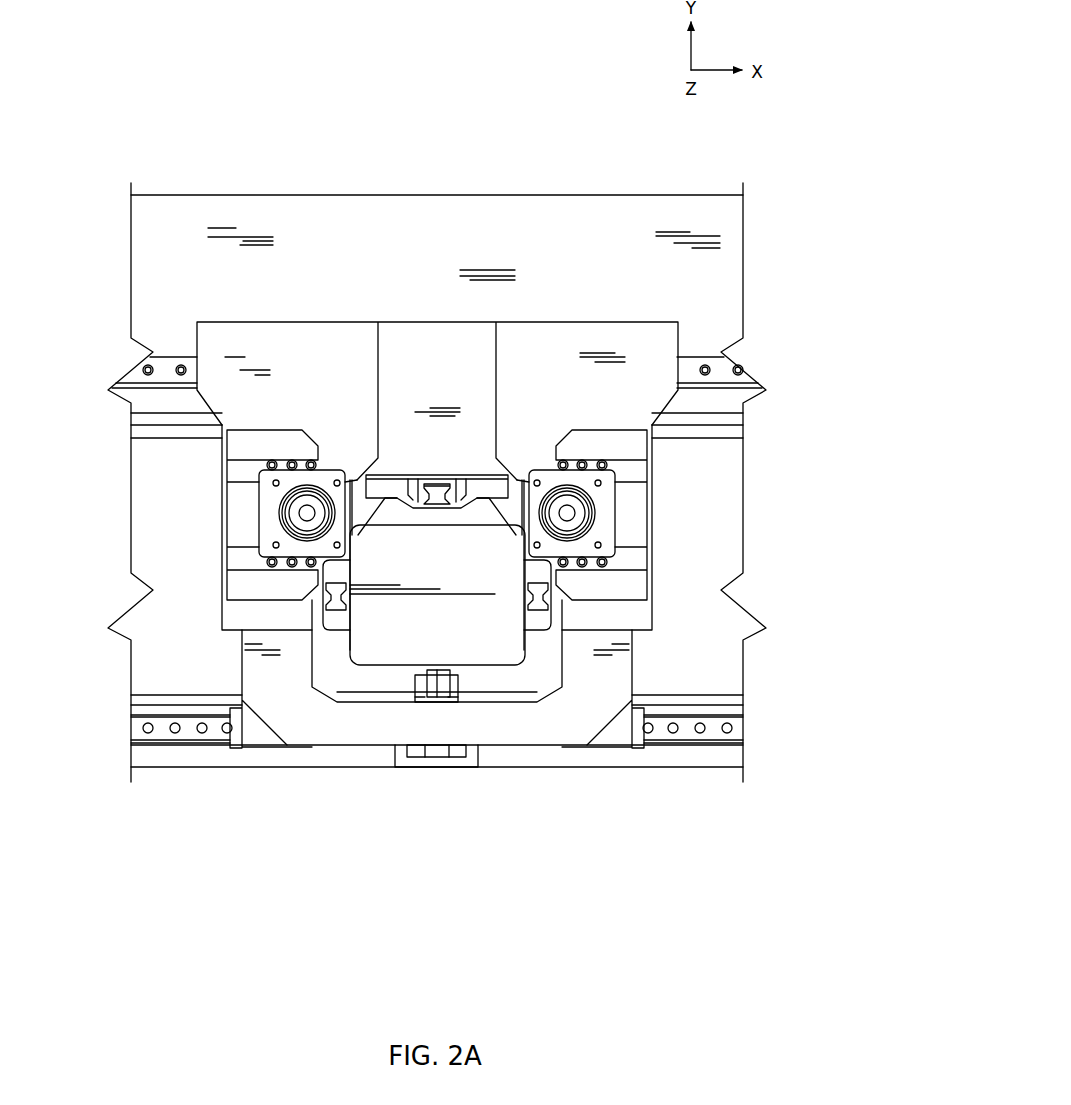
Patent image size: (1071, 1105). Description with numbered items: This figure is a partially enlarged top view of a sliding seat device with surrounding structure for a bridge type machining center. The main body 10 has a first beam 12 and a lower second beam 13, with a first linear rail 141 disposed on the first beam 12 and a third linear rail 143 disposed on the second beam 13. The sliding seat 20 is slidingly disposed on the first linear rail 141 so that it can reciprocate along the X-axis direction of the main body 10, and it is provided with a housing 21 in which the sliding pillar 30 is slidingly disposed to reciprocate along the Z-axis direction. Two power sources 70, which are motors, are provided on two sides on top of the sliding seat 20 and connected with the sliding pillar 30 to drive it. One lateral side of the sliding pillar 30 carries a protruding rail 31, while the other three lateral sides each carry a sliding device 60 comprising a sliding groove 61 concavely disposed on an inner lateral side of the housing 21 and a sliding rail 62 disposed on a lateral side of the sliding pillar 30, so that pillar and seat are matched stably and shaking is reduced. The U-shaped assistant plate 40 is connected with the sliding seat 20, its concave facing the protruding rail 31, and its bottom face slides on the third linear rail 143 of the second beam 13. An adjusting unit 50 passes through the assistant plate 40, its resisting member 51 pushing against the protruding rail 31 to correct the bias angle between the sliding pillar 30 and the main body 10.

The main body 10 is at (713, 179).
The first beam 12 is at (735, 266).
The second beam 13 is at (140, 755).
The first linear rail 141 is at (733, 358).
The third linear rail 143 is at (140, 723).
The sliding seat 20 is at (553, 318).
The housing 21 is at (492, 683).
The sliding pillar 30 is at (512, 673).
The protruding rail 31 is at (420, 669).
The assistant plate 40 is at (361, 738).
The adjusting unit 50 is at (457, 763).
The resisting member 51 is at (430, 679).
The sliding device 60 is at (318, 615).
The sliding groove 61 is at (327, 599).
The sliding rail 62 is at (340, 598).
The power source 70 is at (252, 519).